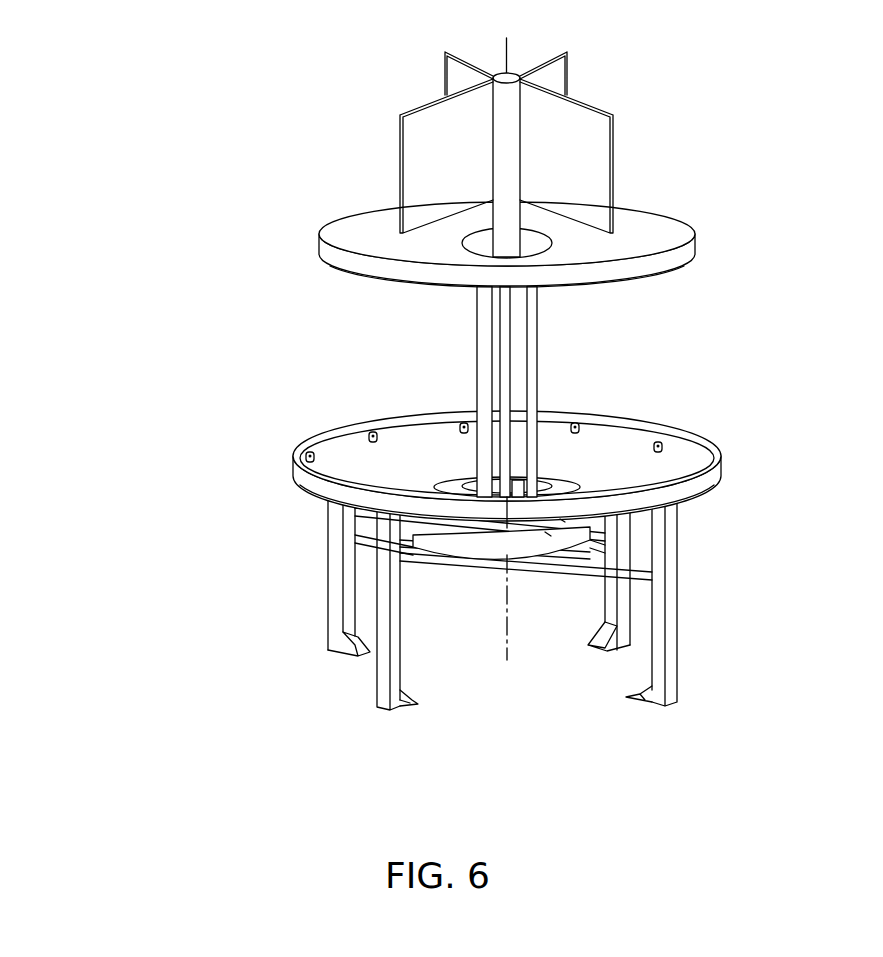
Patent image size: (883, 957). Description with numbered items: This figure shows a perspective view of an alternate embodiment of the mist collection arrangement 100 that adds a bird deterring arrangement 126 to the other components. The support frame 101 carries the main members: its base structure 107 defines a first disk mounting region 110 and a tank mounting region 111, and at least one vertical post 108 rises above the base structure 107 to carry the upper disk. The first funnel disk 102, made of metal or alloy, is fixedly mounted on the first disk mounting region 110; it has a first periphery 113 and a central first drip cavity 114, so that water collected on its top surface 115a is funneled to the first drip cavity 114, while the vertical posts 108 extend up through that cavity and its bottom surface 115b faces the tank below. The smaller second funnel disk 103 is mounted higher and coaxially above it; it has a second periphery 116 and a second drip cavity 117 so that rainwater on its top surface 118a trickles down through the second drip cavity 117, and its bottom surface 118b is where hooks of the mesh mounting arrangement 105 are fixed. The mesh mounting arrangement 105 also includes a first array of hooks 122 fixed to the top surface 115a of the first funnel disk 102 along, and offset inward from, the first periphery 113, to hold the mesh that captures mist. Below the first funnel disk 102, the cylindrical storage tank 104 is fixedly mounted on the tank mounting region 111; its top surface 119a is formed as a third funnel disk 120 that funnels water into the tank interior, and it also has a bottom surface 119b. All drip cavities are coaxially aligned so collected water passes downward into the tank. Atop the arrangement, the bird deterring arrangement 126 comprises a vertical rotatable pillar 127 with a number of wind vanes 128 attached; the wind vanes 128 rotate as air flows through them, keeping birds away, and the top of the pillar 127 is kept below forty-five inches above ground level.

The mist collection arrangement 100 is at (165, 97).
The support frame 101 is at (700, 545).
The first funnel disk 102 is at (723, 463).
The second funnel disk 103 is at (698, 240).
The cylindrical storage tank 104 is at (420, 570).
The mesh mounting arrangement 105 is at (370, 430).
The base structure 107 is at (680, 640).
The vertical post 108 is at (538, 345).
The first disk mounting region 110 is at (585, 558).
The tank mounting region 111 is at (432, 580).
The first periphery 113 is at (293, 470).
The first drip cavity 114 is at (548, 530).
The top surface of the first funnel disk 115a is at (428, 478).
The lower tray bottom surface 115b is at (303, 493).
The second periphery 116 is at (318, 237).
The second drip cavity 117 is at (506, 200).
The top surface of the second funnel disk 118a is at (392, 237).
The bottom surface of the second funnel disk 118b is at (400, 287).
The top surface of the cylindrical storage tank 119a is at (500, 487).
The bottom surface of the cylindrical storage tank 119b is at (562, 520).
The third funnel disk 120 is at (562, 517).
The first array of hooks 122 is at (565, 477).
The bird deterring arrangement 126 is at (428, 98).
The vertical rotatable pillar 127 is at (522, 80).
The wind vanes 128 is at (612, 160).